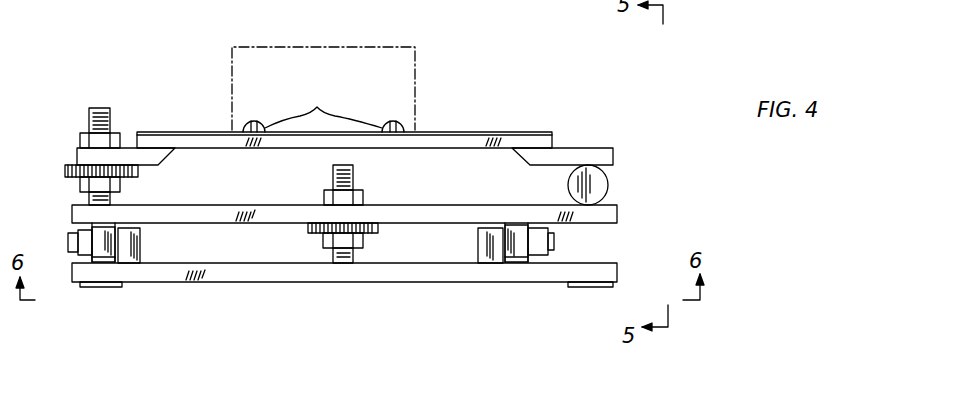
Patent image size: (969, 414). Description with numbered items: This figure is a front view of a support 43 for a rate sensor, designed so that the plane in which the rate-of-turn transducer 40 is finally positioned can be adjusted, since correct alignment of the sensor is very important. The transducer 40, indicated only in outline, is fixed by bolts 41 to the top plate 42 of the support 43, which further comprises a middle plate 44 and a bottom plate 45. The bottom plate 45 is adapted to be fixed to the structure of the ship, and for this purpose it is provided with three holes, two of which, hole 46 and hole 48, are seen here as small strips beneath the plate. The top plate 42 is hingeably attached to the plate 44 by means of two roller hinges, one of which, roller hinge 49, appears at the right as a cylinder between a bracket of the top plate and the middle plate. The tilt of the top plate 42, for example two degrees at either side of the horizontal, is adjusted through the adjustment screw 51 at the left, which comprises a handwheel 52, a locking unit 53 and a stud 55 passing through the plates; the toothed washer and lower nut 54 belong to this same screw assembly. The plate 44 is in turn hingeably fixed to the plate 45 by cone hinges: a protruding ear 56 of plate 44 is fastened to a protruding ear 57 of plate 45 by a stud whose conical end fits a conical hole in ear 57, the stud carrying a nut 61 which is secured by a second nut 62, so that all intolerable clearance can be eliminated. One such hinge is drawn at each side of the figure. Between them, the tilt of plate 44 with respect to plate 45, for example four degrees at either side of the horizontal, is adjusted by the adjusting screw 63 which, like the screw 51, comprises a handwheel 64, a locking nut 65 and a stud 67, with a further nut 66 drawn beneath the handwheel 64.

The rate-of-turn transducer 40 is at (397, 49).
The bolts 41 is at (323, 107).
The top plate 42 is at (546, 132).
The support 43 is at (248, 362).
The plate 44 is at (617, 216).
The plate 45 is at (617, 275).
The hole 46 is at (600, 287).
The hole 48 is at (123, 287).
The roller hinge 49 is at (603, 178).
The adjustment screw 51 is at (70, 131).
The handwheel 52 is at (140, 178).
The locking unit 53 is at (118, 136).
The lock washer and nut 54 is at (120, 184).
The stud 55 is at (97, 107).
The protruding ear 56 is at (105, 250).
The protruding ear 57 is at (140, 243).
The nut 61 is at (87, 245).
The second nut 62 is at (72, 233).
The adjusting screw 63 is at (305, 251).
The handwheel 64 is at (377, 233).
The locking nut 65 is at (325, 197).
The lower nut 66 is at (357, 248).
The stud 67 is at (354, 168).